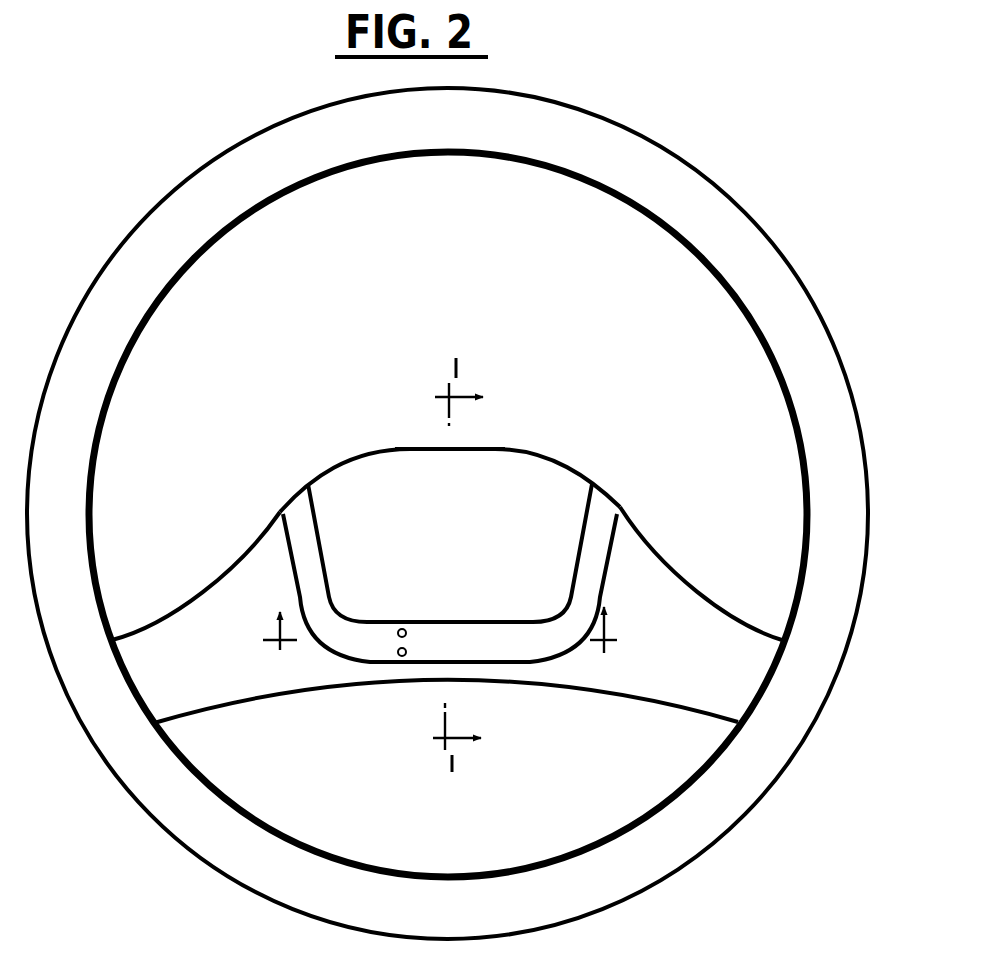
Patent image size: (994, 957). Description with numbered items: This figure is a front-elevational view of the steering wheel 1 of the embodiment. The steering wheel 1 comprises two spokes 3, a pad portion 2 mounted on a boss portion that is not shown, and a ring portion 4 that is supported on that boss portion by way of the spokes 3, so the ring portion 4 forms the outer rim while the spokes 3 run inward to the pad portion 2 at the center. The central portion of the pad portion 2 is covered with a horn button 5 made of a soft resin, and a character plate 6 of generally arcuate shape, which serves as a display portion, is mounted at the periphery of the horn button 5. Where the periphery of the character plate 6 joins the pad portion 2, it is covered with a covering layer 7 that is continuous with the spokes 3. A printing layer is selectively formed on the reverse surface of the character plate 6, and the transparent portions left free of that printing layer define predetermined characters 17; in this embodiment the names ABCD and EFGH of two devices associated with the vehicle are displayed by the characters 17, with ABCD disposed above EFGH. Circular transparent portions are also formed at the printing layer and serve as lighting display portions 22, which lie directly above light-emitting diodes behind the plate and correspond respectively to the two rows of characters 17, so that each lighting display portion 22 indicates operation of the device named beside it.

The steering wheel 1 is at (637, 140).
The pad portion 2 is at (519, 449).
The spokes 3 is at (213, 587).
The ring portion 4 is at (818, 325).
The horn button 5 is at (425, 457).
The character plate 6 is at (343, 612).
The covering layer 7 is at (383, 670).
The characters 17 is at (430, 627).
The lighting display portions 22 is at (407, 647).